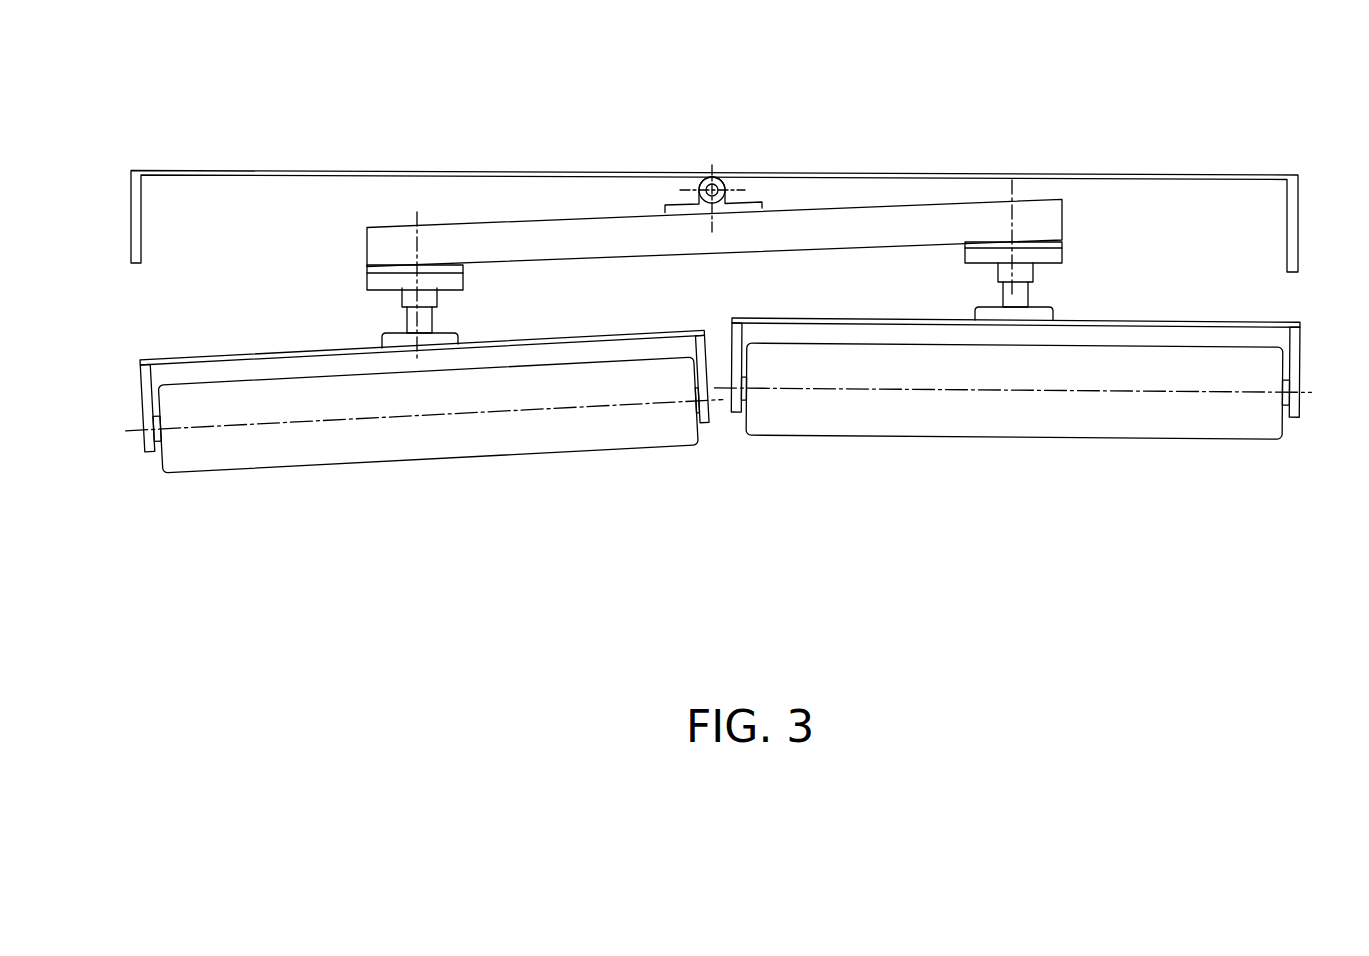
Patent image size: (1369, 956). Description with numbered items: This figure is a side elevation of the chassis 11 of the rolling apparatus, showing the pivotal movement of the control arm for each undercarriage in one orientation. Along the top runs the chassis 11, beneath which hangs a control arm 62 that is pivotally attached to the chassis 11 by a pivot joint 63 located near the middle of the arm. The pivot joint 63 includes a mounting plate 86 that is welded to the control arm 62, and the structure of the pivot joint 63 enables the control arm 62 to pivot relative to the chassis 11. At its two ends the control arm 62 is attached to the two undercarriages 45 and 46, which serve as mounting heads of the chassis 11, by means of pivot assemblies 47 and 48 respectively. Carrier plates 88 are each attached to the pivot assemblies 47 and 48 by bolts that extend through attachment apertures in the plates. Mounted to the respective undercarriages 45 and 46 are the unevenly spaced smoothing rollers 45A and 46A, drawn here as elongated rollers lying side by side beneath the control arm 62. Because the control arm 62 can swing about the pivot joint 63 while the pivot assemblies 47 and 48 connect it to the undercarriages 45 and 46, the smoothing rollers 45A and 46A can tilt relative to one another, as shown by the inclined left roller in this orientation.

The chassis 11 is at (360, 168).
The control arm 62 is at (725, 232).
The pivot joint 63 is at (700, 190).
The mounting plate 86 is at (760, 205).
The carrier plates 88 is at (367, 271).
The pivot assembly 47 is at (443, 315).
The pivot assembly 48 is at (1050, 289).
The undercarriage 45 is at (145, 445).
The smoothing roller 45A is at (360, 447).
The undercarriage 46 is at (1295, 348).
The smoothing roller 46A is at (915, 418).